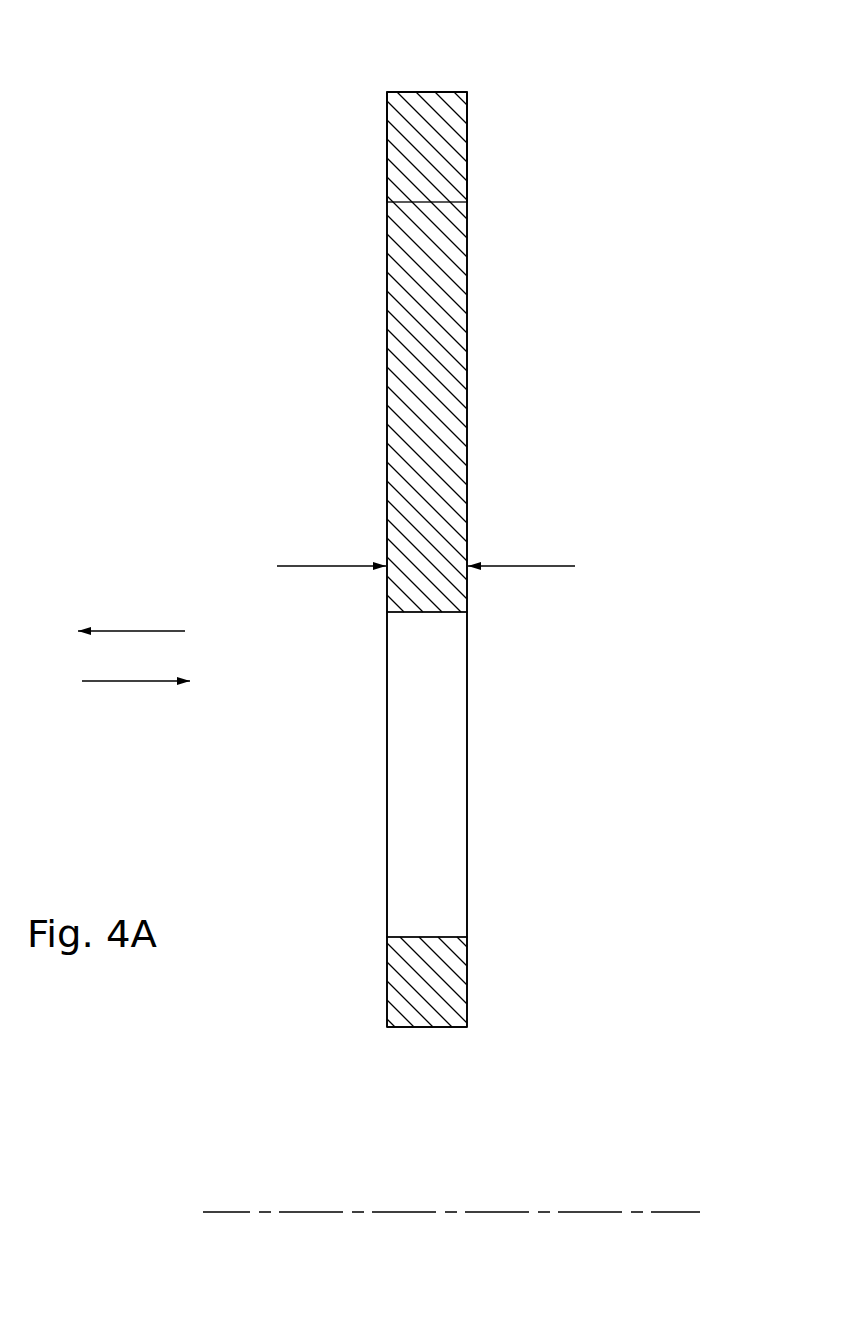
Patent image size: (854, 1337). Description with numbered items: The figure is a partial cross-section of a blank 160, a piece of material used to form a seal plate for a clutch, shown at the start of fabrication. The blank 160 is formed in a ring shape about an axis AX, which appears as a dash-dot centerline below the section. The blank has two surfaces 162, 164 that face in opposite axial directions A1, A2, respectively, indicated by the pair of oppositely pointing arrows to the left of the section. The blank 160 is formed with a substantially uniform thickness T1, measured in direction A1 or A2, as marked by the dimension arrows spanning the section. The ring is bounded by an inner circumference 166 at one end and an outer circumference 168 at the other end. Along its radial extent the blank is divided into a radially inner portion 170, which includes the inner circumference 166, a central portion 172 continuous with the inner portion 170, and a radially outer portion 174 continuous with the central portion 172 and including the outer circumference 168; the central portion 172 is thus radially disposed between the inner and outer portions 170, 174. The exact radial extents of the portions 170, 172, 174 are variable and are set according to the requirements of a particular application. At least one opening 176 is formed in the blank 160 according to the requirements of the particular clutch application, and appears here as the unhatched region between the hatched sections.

The blank 160 is at (523, 133).
The surface 162 is at (387, 270).
The surface 164 is at (467, 278).
The inner circumference 166 is at (427, 1027).
The outer circumference 168 is at (426, 92).
The radially inner portion 170 is at (385, 988).
The central portion 172 is at (385, 406).
The radially outer portion 174 is at (385, 145).
The opening 176 is at (433, 748).
The thickness T1 is at (520, 566).
The axial direction A1 is at (127, 630).
The axial direction A2 is at (135, 683).
The axis AX is at (520, 1212).